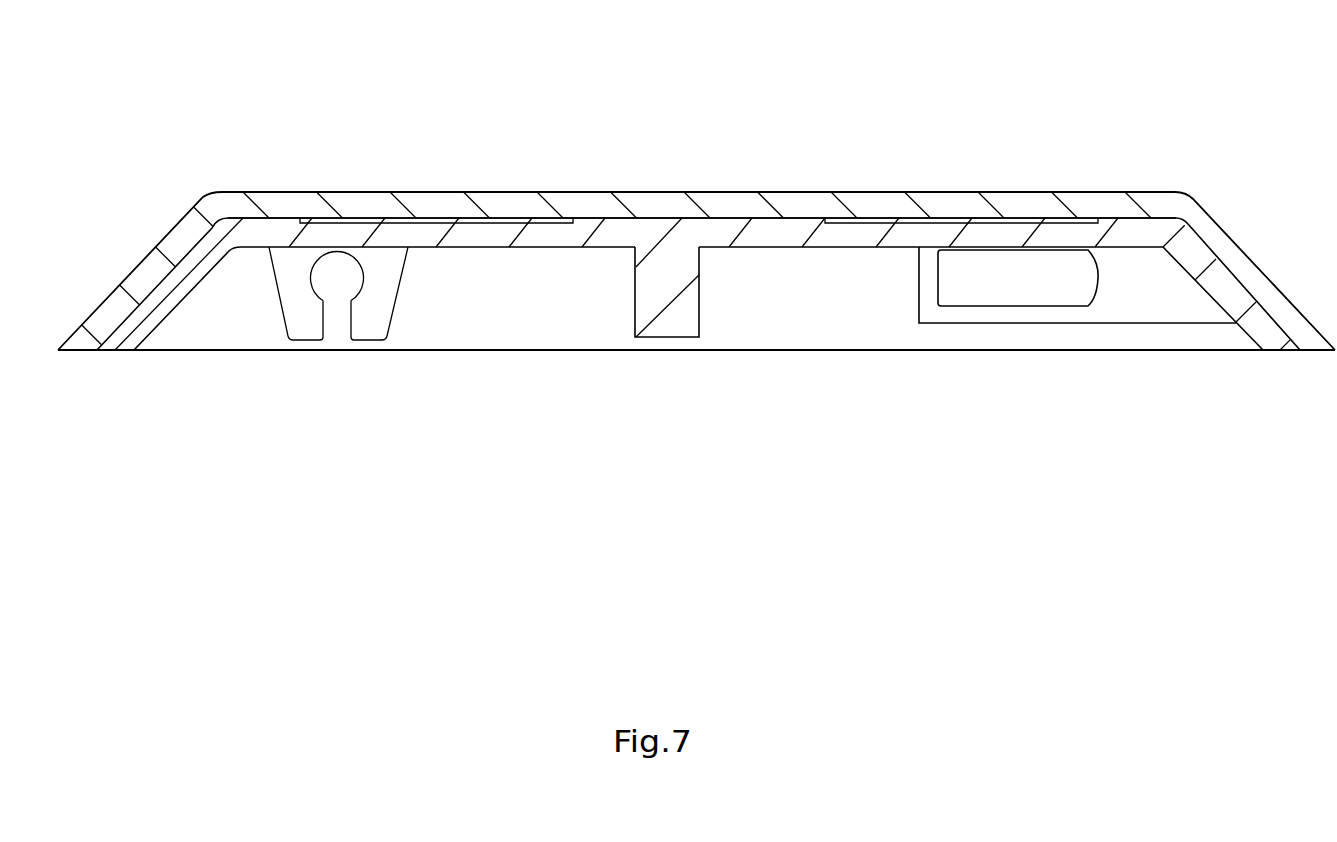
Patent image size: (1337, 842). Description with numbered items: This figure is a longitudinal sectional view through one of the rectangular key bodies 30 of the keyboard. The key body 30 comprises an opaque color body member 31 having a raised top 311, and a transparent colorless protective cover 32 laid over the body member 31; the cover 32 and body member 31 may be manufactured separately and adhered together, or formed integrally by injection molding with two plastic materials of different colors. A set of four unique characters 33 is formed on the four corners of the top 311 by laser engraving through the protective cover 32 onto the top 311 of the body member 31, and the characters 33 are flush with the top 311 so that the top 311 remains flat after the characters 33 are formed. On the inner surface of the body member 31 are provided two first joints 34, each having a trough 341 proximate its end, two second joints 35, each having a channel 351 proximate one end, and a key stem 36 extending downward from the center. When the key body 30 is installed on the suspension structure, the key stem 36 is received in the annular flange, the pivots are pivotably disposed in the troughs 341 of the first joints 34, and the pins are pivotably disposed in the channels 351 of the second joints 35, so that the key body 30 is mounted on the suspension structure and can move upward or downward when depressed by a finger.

The key body 30 is at (757, 97).
The body member 31 is at (783, 230).
The top 311 is at (593, 218).
The protective cover 32 is at (650, 207).
The characters 33 is at (440, 220).
The first joint 34 is at (370, 325).
The trough 341 is at (335, 265).
The second joint 35 is at (1132, 293).
The channel 351 is at (1012, 280).
The key stem 36 is at (668, 322).